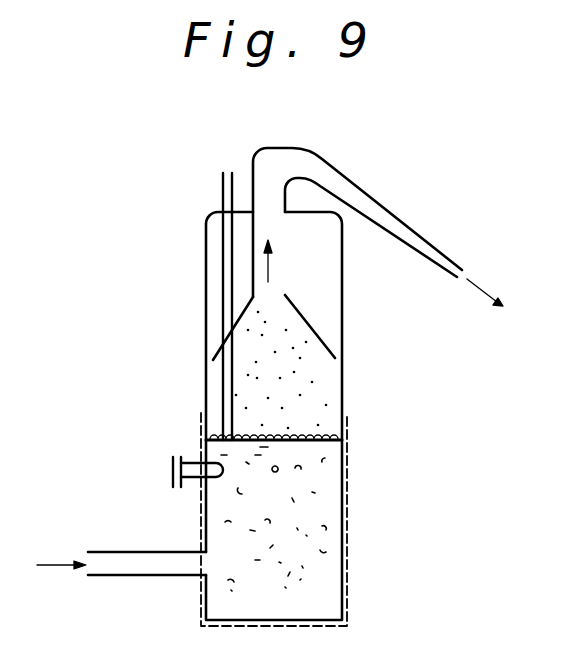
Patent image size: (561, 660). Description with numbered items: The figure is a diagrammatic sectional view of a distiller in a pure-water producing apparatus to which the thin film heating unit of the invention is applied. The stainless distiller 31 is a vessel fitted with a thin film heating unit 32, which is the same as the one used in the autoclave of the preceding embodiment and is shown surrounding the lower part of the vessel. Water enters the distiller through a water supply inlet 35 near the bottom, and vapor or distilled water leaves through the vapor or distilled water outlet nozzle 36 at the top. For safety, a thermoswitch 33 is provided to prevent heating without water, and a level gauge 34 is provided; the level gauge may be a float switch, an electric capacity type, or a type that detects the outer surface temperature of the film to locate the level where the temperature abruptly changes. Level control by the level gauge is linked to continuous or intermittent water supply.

The stainless distiller 31 is at (344, 372).
The thin film heating unit 32 is at (346, 503).
The thermoswitch 33 is at (172, 463).
The level gauge 34 is at (222, 177).
The water supply inlet 35 is at (53, 561).
The vapor or distilled water outlet nozzle 36 is at (437, 247).